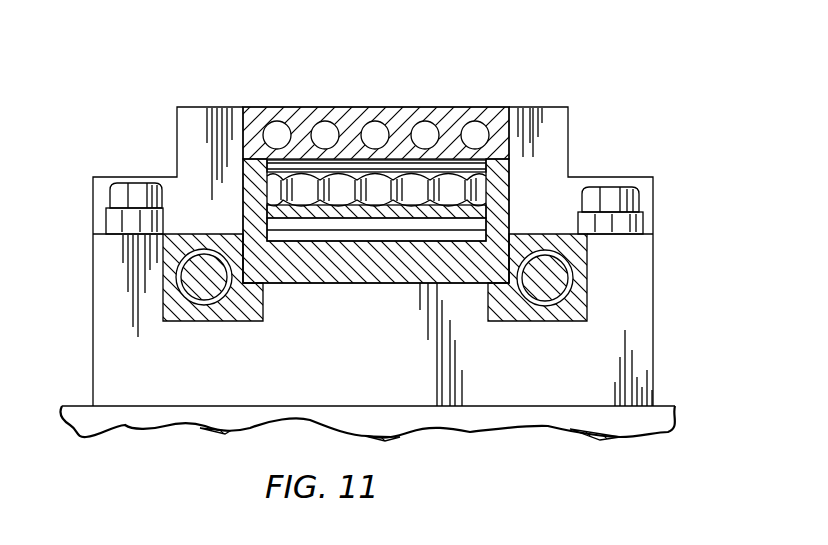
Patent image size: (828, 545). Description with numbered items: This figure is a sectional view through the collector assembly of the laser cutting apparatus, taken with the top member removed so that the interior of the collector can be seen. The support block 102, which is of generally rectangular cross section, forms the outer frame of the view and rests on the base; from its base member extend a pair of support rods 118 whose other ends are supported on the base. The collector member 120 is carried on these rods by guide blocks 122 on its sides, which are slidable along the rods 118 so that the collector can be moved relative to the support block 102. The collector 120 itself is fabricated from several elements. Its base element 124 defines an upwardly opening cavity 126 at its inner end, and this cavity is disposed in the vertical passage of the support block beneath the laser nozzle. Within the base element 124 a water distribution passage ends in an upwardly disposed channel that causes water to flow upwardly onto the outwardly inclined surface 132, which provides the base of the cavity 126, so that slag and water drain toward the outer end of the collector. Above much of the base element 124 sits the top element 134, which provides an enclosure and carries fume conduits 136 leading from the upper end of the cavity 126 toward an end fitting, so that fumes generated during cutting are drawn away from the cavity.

The support block 102 is at (660, 368).
The support rods 118 is at (547, 278).
The collector member 120 is at (386, 100).
The guide blocks 122 is at (587, 302).
The base element 124 is at (387, 263).
The cavity 126 is at (470, 232).
The outwardly inclined surface 132 is at (482, 192).
The top element 134 is at (444, 113).
The fume conduits 136 is at (474, 133).